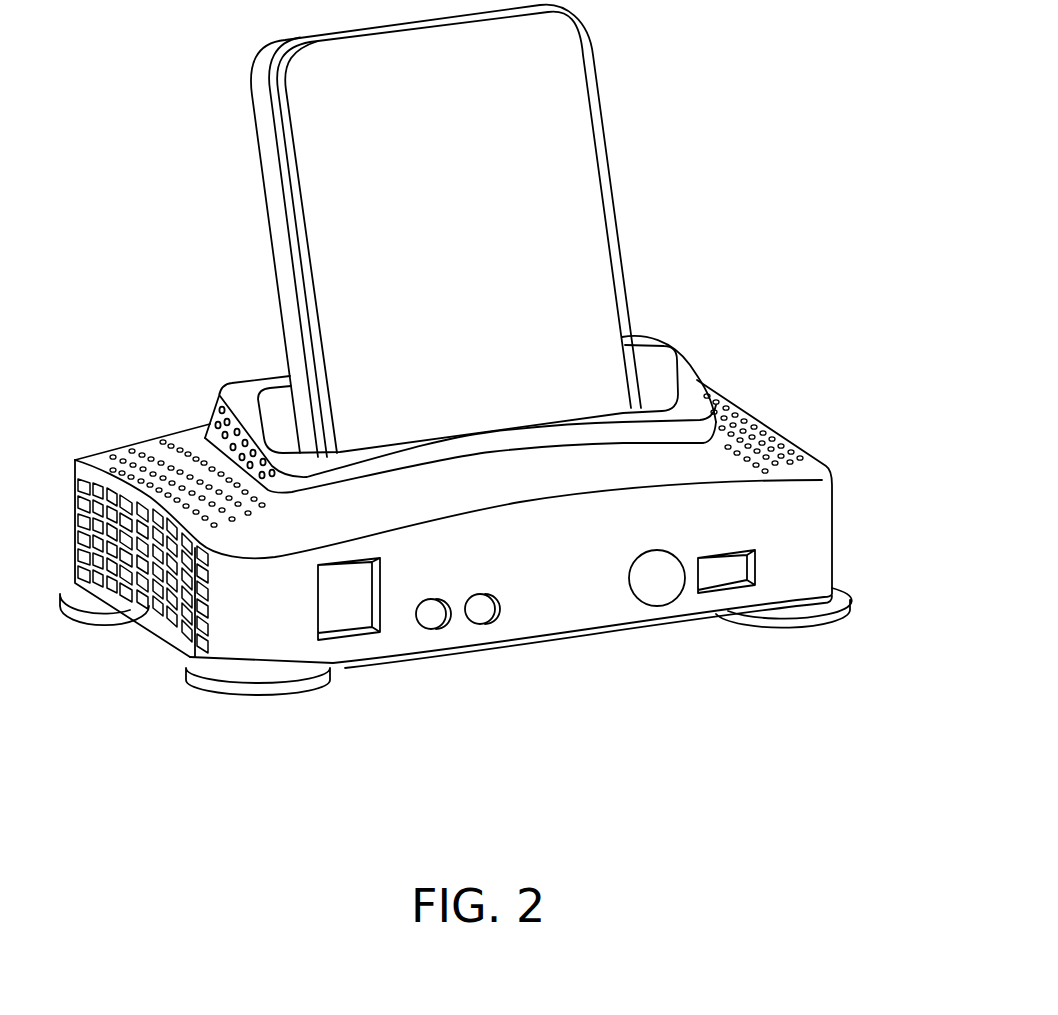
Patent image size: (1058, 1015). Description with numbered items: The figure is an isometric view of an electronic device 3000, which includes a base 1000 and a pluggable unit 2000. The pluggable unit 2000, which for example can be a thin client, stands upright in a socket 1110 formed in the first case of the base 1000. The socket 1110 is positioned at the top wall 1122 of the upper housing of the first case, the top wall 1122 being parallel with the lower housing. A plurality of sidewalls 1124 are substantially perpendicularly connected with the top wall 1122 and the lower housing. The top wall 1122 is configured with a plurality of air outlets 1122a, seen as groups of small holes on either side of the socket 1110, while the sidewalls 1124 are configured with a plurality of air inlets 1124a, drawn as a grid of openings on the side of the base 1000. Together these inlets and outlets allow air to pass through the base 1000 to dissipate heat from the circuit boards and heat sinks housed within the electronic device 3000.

The base 1000 is at (793, 548).
The socket 1110 is at (653, 391).
The top wall 1122 is at (688, 466).
The air outlets 1122a is at (148, 447).
The sidewalls 1124 is at (157, 605).
The air inlets 1124a is at (128, 594).
The pluggable unit 2000 is at (557, 218).
The electronic device 3000 is at (797, 748).